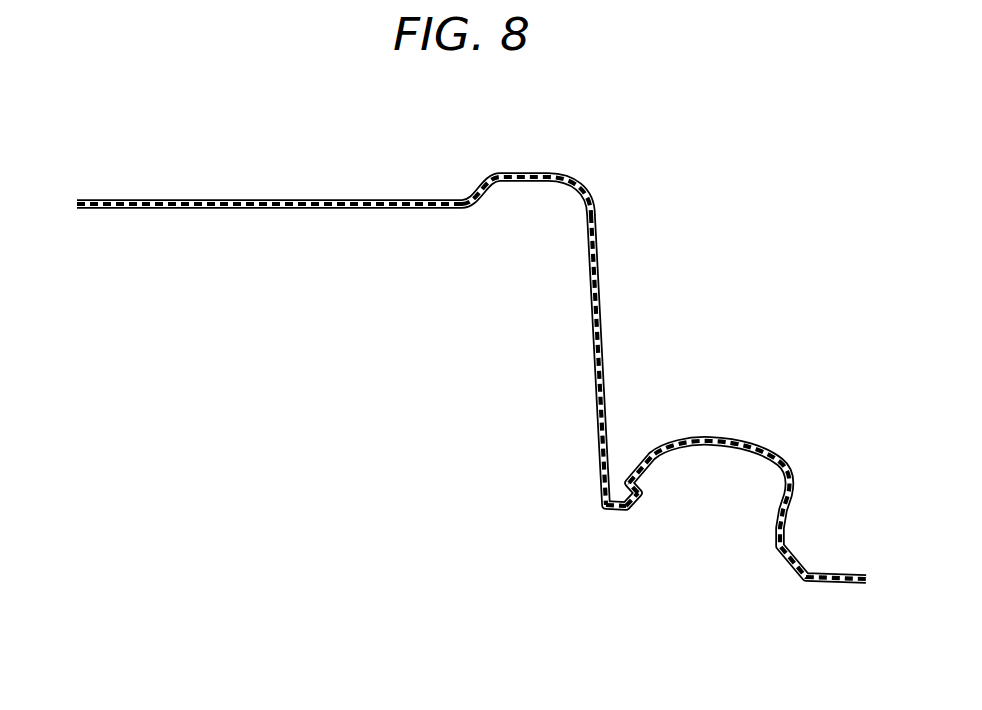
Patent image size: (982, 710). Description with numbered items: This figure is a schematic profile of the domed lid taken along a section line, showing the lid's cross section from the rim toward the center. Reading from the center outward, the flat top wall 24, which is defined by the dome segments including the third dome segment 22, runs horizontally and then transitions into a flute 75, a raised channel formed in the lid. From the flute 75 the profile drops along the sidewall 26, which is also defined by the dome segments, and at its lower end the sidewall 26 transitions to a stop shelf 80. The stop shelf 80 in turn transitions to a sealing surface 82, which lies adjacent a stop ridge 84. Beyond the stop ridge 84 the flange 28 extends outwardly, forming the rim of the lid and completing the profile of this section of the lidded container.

The top wall 24 is at (143, 195).
The third dome segment 22 is at (252, 199).
The flute 75 is at (468, 192).
The sidewall 26 is at (604, 328).
The flange 28 is at (718, 438).
The stop shelf 80 is at (610, 512).
The sealing surface 82 is at (643, 500).
The stop ridge 84 is at (645, 486).